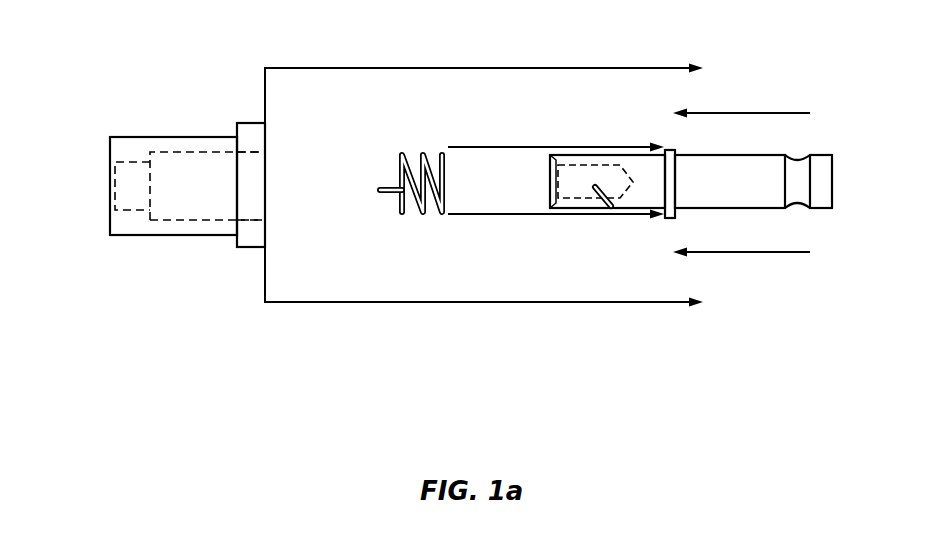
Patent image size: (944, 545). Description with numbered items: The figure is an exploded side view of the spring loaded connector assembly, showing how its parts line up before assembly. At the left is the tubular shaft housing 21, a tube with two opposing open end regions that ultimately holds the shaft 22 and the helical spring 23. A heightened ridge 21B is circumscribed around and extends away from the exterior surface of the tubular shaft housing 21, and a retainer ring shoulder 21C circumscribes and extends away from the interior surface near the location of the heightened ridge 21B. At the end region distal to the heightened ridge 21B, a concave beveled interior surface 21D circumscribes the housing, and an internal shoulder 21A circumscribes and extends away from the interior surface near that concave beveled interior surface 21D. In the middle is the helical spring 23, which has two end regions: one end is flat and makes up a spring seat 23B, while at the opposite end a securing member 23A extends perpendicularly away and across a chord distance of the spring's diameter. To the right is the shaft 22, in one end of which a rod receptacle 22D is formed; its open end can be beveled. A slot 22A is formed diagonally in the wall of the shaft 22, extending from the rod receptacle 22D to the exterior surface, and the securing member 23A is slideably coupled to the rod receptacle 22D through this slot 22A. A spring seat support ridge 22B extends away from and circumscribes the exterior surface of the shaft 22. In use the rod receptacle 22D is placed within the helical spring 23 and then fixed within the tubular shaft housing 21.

The tubular shaft housing 21 is at (210, 170).
The internal shoulder 21A is at (198, 165).
The heightened ridge 21B is at (250, 123).
The retainer ring shoulder 21C is at (265, 143).
The concave beveled interior surface 21D is at (135, 205).
The shaft 22 is at (691, 195).
The slot 22A is at (611, 206).
The spring seat support ridge 22B is at (677, 218).
The rod receptacle 22D is at (578, 175).
The helical spring 23 is at (419, 195).
The securing member 23A is at (382, 193).
The spring seat 23B is at (422, 153).